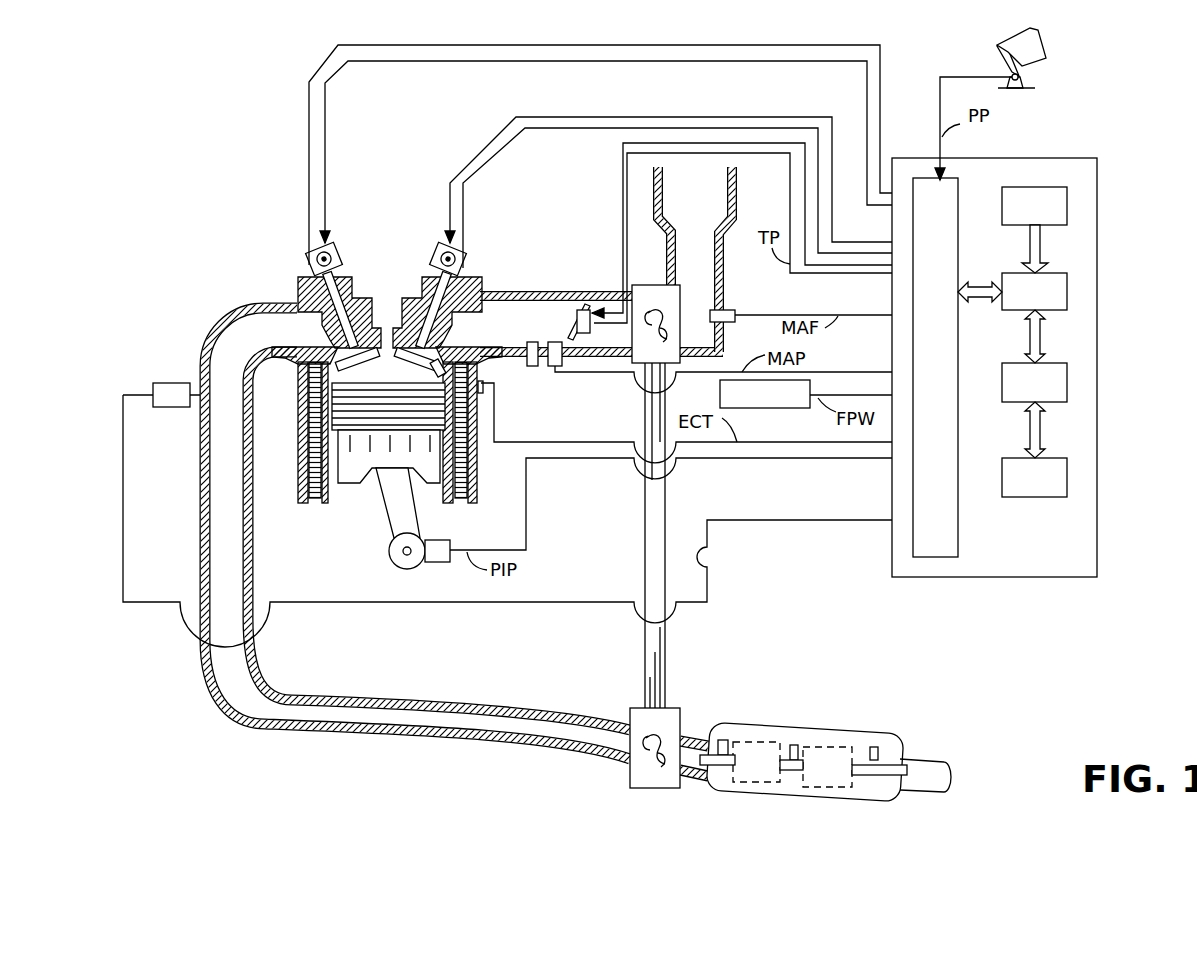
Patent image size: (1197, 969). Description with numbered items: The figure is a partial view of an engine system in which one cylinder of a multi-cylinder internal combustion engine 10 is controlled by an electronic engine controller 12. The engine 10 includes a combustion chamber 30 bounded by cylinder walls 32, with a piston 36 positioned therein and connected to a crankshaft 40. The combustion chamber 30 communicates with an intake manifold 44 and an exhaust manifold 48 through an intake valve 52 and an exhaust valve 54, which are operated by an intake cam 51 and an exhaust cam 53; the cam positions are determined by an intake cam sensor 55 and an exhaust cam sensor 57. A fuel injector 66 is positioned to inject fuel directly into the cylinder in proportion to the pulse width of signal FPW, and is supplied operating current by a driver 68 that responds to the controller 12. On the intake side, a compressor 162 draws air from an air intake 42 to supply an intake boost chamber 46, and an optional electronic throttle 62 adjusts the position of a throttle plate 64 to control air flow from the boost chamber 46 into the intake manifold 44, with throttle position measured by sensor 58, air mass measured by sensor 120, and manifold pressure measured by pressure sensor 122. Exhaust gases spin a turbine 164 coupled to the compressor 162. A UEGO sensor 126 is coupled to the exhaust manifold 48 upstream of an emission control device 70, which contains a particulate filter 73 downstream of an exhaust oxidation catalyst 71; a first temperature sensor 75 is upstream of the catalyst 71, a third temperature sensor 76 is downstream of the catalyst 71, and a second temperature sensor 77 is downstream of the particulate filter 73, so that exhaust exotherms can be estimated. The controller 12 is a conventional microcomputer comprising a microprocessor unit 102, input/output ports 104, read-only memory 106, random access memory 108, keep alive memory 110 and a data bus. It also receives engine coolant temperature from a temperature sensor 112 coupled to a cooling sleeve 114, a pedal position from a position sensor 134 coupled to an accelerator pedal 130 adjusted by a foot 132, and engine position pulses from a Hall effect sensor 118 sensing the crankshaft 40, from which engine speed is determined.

The internal combustion engine 10 is at (234, 232).
The electronic engine controller 12 is at (1093, 158).
The combustion chamber 30 is at (387, 367).
The cylinder walls 32 is at (336, 490).
The piston 36 is at (372, 458).
The crankshaft 40 is at (397, 568).
The air intake 42 is at (705, 210).
The intake manifold 44 is at (519, 333).
The intake boost chamber 46 is at (625, 343).
The exhaust manifold 48 is at (277, 340).
The intake cam 51 is at (444, 245).
The intake valve 52 is at (430, 333).
The exhaust cam 53 is at (330, 245).
The exhaust valve 54 is at (340, 313).
The intake cam sensor 55 is at (457, 267).
The exhaust cam sensor 57 is at (312, 263).
The throttle position sensor 58 is at (598, 293).
The electronic throttle 62 is at (576, 305).
The throttle plate 64 is at (586, 310).
The fuel injector 66 is at (447, 368).
The driver 68 is at (810, 405).
The emission control device 70 is at (805, 740).
The exhaust oxidation catalyst 71 is at (752, 742).
The particulate filter 73 is at (828, 747).
The first temperature sensor 75 is at (723, 740).
The third temperature sensor 76 is at (875, 747).
The second temperature sensor 77 is at (794, 745).
The microprocessor unit 102 is at (1067, 290).
The input/output ports 104 is at (960, 187).
The read-only memory 106 is at (1067, 205).
The random access memory 108 is at (1067, 383).
The keep alive memory 110 is at (1067, 478).
The temperature sensor 112 is at (481, 395).
The cooling sleeve 114 is at (472, 480).
The Hall effect sensor 118 is at (431, 562).
The air mass sensor 120 is at (726, 310).
The pressure sensor 122 is at (553, 342).
The Universal Exhaust Gas Oxygen sensor 126 is at (153, 388).
The accelerator pedal 130 is at (997, 50).
The foot 132 is at (1044, 42).
The position sensor 134 is at (1027, 77).
The compressor 162 is at (662, 285).
The turbine 164 is at (642, 708).